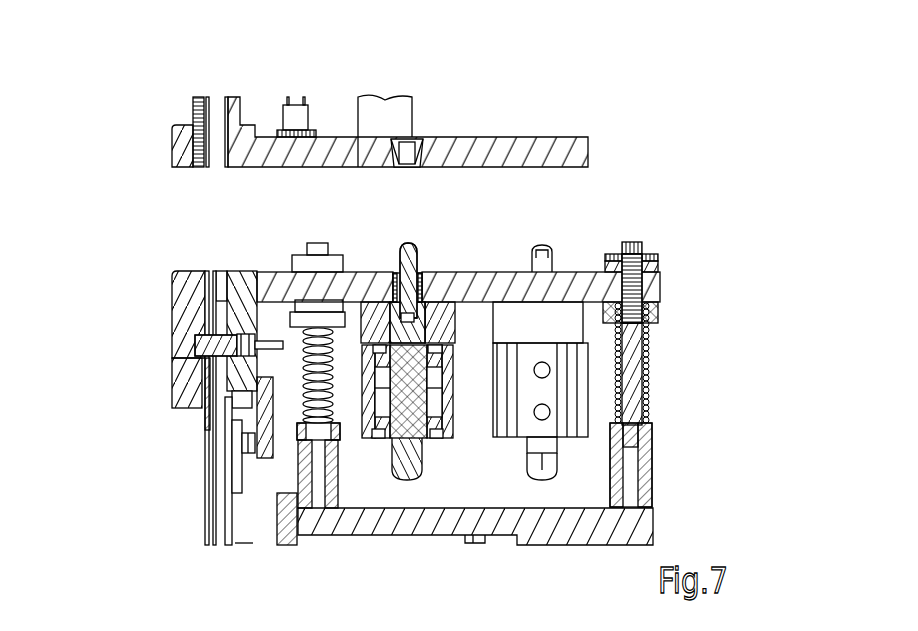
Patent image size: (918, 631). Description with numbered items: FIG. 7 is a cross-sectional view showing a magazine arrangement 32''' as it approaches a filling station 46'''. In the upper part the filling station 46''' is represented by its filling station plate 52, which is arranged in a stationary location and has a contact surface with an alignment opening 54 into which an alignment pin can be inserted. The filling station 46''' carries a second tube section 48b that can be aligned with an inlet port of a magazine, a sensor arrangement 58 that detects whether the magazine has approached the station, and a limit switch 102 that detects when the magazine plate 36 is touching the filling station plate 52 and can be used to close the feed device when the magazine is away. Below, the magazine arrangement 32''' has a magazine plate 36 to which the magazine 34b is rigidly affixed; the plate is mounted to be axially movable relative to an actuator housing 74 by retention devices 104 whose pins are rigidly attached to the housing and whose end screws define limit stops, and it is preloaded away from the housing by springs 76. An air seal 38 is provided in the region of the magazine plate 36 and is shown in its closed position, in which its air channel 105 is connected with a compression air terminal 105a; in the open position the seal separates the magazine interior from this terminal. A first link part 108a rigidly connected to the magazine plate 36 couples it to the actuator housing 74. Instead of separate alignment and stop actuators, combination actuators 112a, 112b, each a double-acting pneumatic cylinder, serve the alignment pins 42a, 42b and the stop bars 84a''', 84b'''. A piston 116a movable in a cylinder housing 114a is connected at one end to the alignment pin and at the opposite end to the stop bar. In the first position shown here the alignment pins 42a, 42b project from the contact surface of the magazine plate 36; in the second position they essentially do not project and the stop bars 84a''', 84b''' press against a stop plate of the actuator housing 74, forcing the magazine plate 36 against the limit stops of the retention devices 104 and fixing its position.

The second tube section 48b is at (193, 118).
The sensor arrangement 58 is at (308, 118).
The limit switch 102 is at (387, 113).
The alignment opening 54 is at (420, 140).
The filling station plate 52 is at (567, 150).
The filling station 46''' is at (682, 69).
The air channel 105 is at (240, 340).
The compression air terminal 105a is at (278, 332).
The air seal 38 is at (165, 347).
The retention device 104 is at (347, 244).
The alignment pin 42a is at (415, 242).
The magazine plate 36 is at (482, 285).
The alignment pin 42b is at (544, 246).
The magazine arrangement 32''' is at (748, 265).
The springs 76 is at (643, 367).
The combination actuator 112b is at (594, 417).
The actuator housing 74 is at (650, 527).
The first link part 108a is at (232, 478).
The magazine 34b is at (220, 500).
The combination actuator 112a is at (381, 471).
The stop bar 84a''' is at (417, 527).
The cylinder housing 114a is at (437, 425).
The piston 116a is at (427, 397).
The stop bar 84b''' is at (575, 527).